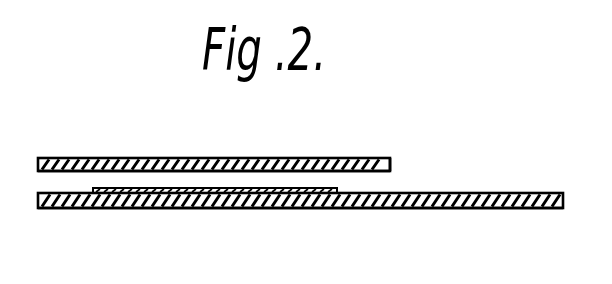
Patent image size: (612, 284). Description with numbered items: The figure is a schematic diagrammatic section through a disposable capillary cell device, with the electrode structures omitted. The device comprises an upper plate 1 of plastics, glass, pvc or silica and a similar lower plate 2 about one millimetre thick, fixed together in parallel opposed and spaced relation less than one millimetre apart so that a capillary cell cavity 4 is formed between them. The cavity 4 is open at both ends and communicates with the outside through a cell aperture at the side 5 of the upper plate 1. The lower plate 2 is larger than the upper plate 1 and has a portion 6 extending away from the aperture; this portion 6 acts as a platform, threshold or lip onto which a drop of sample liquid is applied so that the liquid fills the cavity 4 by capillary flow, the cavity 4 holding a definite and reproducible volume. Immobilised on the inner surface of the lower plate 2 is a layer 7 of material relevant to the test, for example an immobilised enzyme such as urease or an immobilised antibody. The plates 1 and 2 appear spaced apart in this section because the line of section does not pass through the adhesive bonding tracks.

The upper plate 1 is at (331, 158).
The lower plate 2 is at (318, 194).
The capillary cell cavity 4 is at (131, 173).
The side of plate 1 5 is at (394, 160).
The portion of plate 2 6 is at (488, 206).
The layer 7 is at (229, 195).